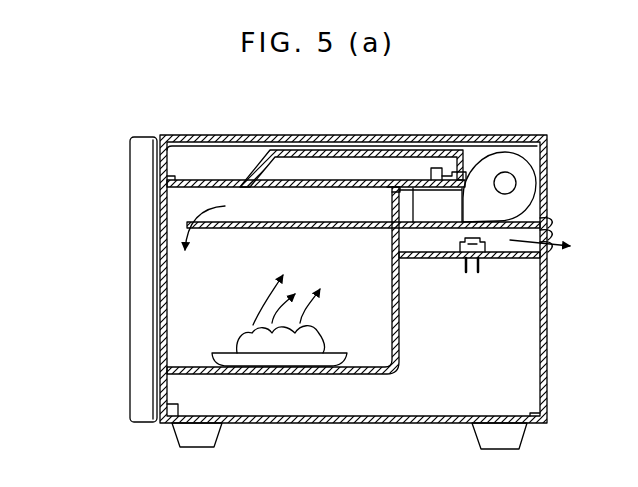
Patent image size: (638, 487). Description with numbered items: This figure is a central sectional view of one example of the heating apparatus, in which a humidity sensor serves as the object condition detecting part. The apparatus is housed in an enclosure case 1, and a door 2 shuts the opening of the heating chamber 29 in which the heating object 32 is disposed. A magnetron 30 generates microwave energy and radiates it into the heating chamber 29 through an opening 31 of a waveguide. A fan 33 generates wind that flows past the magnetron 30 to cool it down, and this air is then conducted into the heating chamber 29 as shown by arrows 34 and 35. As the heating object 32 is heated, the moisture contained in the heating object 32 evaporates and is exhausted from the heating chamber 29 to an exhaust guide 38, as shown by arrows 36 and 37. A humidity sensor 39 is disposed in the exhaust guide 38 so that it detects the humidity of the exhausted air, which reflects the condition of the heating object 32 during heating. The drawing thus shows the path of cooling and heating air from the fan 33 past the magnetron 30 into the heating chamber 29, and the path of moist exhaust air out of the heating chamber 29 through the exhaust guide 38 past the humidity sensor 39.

The enclosure case 1 is at (363, 136).
The door 2 is at (140, 332).
The heating chamber 29 is at (237, 304).
The magnetron 30 is at (440, 168).
The opening of a waveguide 31 is at (281, 189).
The heating object 32 is at (279, 346).
The fan 33 is at (532, 170).
The arrow 34 is at (403, 201).
The arrow 35 is at (205, 240).
The arrow 36 is at (288, 294).
The arrow 37 is at (387, 242).
The exhaust guide 38 is at (410, 259).
The humidity sensor 39 is at (461, 259).